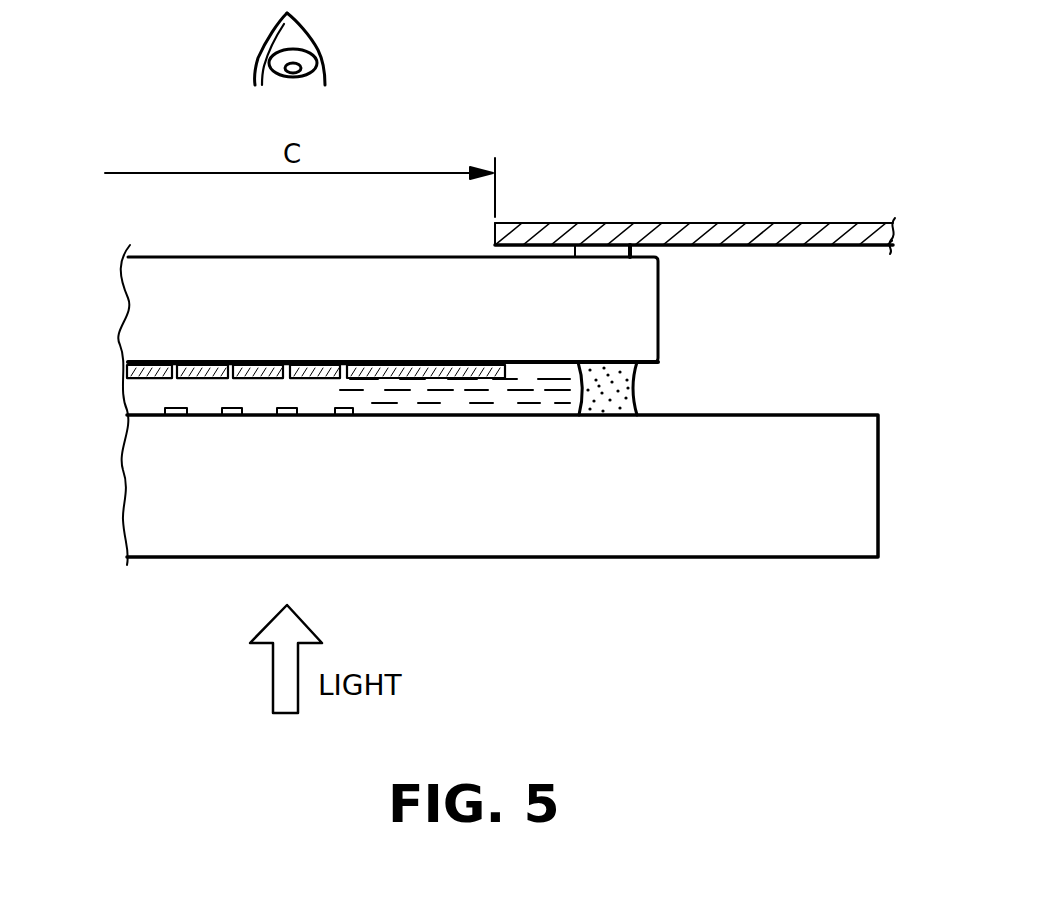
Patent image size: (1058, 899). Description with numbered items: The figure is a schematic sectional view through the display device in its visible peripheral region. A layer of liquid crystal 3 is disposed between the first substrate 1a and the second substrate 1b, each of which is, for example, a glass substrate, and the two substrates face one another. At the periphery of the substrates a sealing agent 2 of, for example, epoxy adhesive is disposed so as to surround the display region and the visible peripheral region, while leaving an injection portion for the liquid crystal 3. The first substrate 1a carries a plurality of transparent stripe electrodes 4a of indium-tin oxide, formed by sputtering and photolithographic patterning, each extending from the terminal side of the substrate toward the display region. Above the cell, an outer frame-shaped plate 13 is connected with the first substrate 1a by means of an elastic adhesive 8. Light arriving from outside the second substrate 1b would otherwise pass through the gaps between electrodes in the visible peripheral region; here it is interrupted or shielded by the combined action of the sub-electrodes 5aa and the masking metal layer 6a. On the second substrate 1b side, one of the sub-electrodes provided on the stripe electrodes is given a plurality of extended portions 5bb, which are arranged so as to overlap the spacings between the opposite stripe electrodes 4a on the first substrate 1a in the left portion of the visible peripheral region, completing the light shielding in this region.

The outer frame-shaped plate 13 is at (742, 222).
The adhesive 8 is at (622, 252).
The first substrate 1a is at (643, 288).
The masking metal layer 6a is at (487, 358).
The stripe electrodes 4a is at (148, 363).
The sub-electrodes 5aa is at (305, 380).
The extended portions 5bb is at (343, 417).
The liquid crystal 3 is at (537, 372).
The sealing agent 2 is at (627, 400).
The second substrate 1b is at (690, 532).